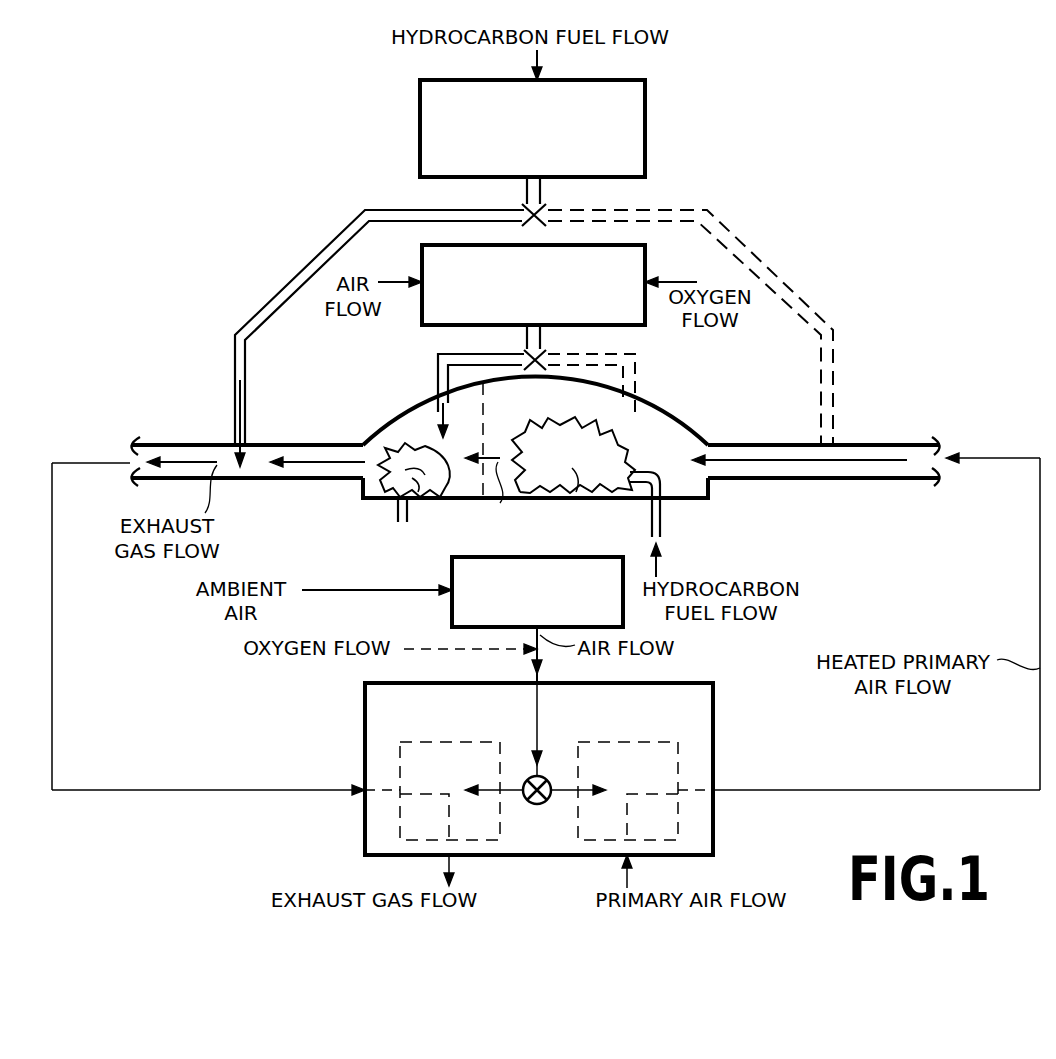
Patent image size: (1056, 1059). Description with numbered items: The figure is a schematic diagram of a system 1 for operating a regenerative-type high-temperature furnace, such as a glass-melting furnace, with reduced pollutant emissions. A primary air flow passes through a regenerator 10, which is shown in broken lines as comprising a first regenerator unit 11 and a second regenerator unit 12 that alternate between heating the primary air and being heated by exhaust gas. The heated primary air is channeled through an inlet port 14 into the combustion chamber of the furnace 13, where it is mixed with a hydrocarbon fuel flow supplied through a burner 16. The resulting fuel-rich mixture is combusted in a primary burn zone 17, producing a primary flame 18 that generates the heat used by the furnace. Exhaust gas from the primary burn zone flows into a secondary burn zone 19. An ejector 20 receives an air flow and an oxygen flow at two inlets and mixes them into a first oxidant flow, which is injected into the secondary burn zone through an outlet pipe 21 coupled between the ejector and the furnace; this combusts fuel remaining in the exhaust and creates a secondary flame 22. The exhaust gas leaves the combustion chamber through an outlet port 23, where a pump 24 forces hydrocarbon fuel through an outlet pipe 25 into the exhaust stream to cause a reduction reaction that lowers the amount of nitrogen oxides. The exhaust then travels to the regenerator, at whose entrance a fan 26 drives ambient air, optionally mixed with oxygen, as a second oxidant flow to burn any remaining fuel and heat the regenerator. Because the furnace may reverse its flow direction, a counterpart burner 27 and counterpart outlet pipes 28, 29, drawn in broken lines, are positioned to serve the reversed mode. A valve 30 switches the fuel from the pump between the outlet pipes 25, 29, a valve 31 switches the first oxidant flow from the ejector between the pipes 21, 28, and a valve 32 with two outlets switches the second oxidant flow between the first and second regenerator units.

The system 1 is at (902, 190).
The regenerator 10 is at (713, 698).
The first regenerator unit 11 is at (678, 760).
The second regenerator unit 12 is at (400, 765).
The furnace 13 is at (740, 396).
The inlet port 14 is at (833, 480).
The burner 16 is at (660, 523).
The primary burn zone 17 is at (637, 490).
The primary flame 18 is at (585, 467).
The secondary burn zone 19 is at (420, 498).
The ejector 20 is at (645, 322).
The outlet pipe 21 is at (435, 378).
The secondary flame 22 is at (425, 455).
The outlet port 23 is at (285, 480).
The pump 24 is at (645, 108).
The outlet pipe 25 is at (293, 277).
The fan 26 is at (452, 612).
The burner 27 is at (398, 520).
The outlet pipe 28 is at (638, 378).
The outlet pipe 29 is at (800, 302).
The valve 30 is at (522, 209).
The valve 31 is at (523, 349).
The valve 32 is at (537, 804).